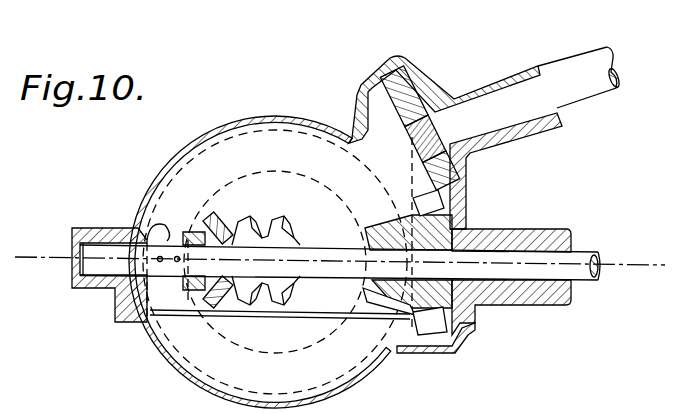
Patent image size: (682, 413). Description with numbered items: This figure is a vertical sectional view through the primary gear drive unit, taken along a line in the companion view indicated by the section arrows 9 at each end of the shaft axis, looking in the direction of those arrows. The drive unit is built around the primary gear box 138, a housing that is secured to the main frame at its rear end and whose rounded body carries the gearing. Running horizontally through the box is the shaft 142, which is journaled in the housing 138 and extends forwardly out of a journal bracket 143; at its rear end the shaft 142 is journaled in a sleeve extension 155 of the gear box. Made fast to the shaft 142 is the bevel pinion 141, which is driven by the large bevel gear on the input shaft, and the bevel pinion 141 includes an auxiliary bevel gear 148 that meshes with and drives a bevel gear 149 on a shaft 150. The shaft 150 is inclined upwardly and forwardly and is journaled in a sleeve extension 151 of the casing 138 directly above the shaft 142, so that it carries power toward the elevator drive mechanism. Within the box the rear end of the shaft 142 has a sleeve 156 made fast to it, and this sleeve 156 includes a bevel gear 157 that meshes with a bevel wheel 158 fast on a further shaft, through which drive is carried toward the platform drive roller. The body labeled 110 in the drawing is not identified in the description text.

The section line 9— 9 is at (22, 237).
The housing 110 is at (329, 262).
The primary gear box 138 is at (265, 117).
The bevel pinion 141 is at (390, 306).
The shaft 142 is at (579, 281).
The journal bracket 143 is at (506, 296).
The auxiliary bevel gear 148 is at (464, 197).
The bevel gear 149 is at (418, 30).
The shaft 150 is at (562, 77).
The sleeve extension 151 is at (482, 62).
The sleeve extension 155 is at (97, 280).
The sleeve 156 is at (133, 245).
The bevel gear 157 is at (227, 203).
The bevel wheel 158 is at (272, 221).